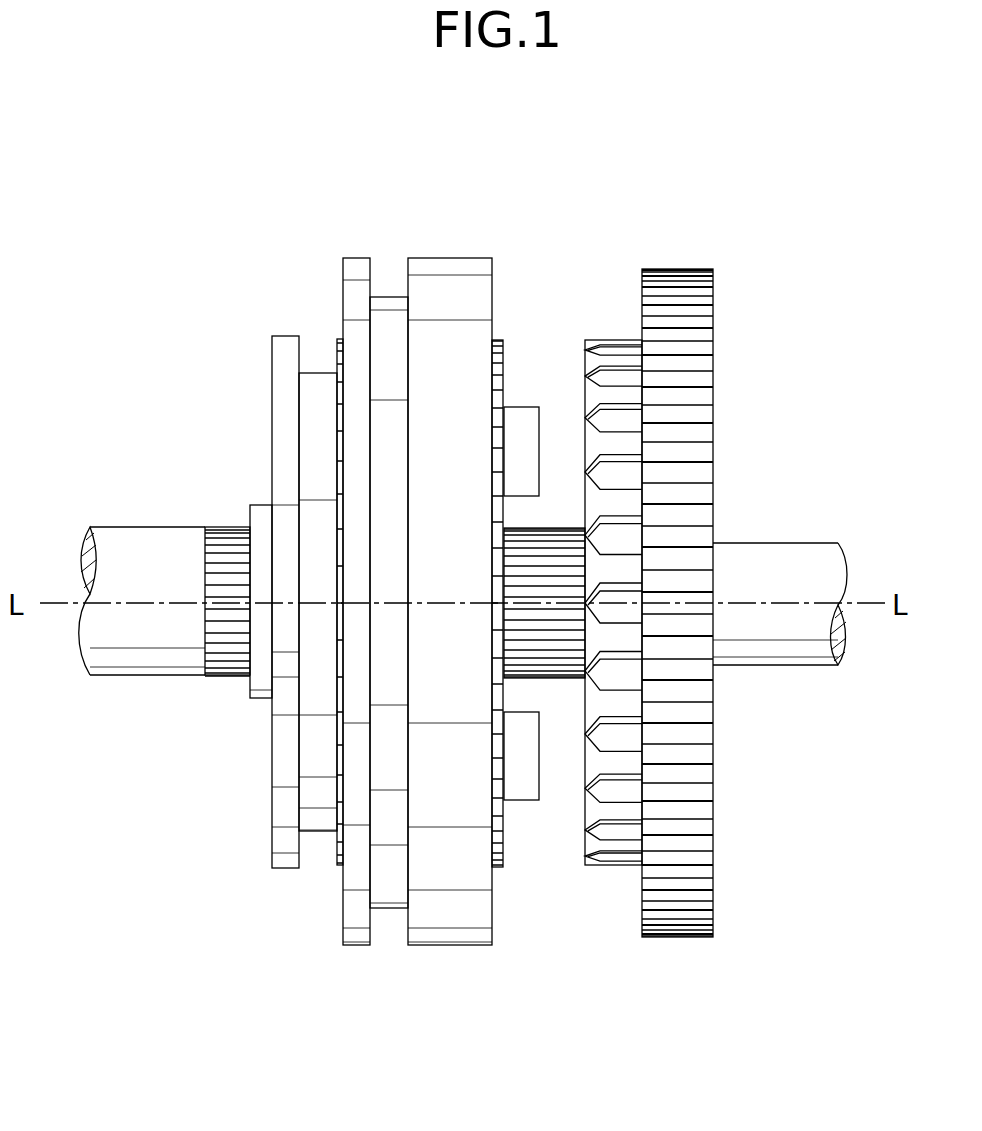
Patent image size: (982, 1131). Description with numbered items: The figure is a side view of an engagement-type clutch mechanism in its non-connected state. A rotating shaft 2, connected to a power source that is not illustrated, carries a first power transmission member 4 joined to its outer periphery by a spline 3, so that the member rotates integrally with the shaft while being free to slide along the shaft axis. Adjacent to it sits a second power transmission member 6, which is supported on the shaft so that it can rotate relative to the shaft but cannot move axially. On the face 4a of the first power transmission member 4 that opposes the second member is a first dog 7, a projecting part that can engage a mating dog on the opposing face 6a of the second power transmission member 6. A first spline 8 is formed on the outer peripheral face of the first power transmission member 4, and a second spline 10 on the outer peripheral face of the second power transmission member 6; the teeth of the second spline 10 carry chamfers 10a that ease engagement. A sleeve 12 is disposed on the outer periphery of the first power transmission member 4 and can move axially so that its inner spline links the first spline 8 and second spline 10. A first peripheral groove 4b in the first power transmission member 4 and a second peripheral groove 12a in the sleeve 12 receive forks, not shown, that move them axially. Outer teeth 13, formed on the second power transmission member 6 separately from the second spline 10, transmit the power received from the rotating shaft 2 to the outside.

The rotating shaft 2 is at (142, 527).
The spline 3 is at (232, 535).
The first power transmission member 4 is at (272, 377).
The face of the first power transmission member 4a is at (504, 840).
The first peripheral groove 4b is at (316, 373).
The second power transmission member 6 is at (713, 395).
The face of the second power transmission member 6a is at (585, 795).
The first dog 7 is at (518, 450).
The first spline 8 is at (497, 340).
The second spline 10 is at (620, 368).
The chamfer 10a is at (592, 440).
The sleeve 12 is at (443, 270).
The second peripheral groove 12a is at (385, 297).
The outer teeth 13 is at (674, 268).